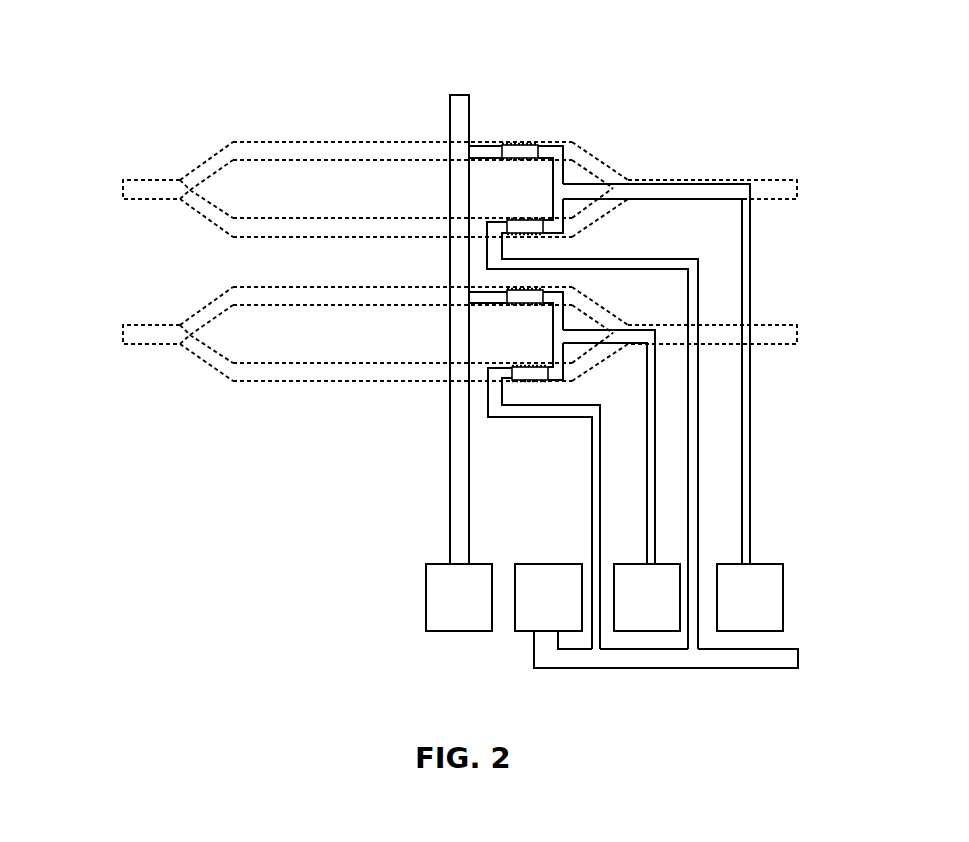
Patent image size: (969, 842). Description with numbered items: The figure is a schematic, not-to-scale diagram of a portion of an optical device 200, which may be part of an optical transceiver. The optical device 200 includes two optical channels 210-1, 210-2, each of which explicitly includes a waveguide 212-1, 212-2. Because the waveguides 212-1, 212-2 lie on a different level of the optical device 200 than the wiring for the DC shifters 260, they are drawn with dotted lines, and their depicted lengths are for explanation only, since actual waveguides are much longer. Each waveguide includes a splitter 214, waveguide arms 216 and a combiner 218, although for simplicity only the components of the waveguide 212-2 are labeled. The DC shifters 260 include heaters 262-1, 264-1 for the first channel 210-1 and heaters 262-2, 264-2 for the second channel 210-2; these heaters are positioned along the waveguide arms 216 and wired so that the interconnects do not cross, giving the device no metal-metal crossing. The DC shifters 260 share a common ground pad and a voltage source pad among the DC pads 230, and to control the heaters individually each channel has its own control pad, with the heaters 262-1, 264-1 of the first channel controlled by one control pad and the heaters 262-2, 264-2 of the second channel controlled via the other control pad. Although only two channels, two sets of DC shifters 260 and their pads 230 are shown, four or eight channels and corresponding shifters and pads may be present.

The optical device 200 is at (481, 26).
The optical channel 210-1 is at (103, 331).
The optical channel 210-2 is at (103, 191).
The waveguide 212-1 is at (765, 325).
The waveguide 212-2 is at (782, 180).
The splitter 214 is at (183, 161).
The waveguide arms 216 is at (284, 130).
The combiner 218 is at (644, 162).
The DC pads 230 is at (383, 600).
The DC shifters 260 is at (519, 101).
The heater 262-1 is at (543, 380).
The heater 262-2 is at (525, 233).
The heater 264-1 is at (525, 305).
The heater 264-2 is at (523, 145).